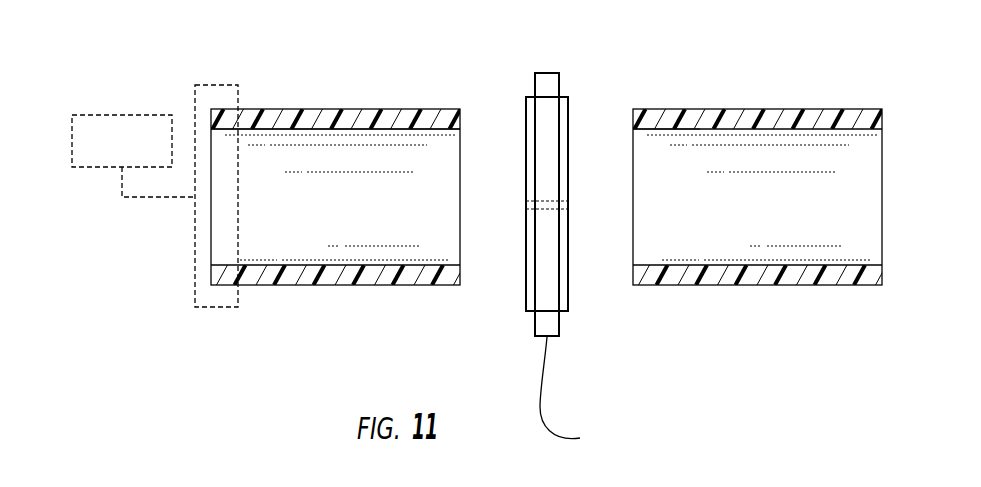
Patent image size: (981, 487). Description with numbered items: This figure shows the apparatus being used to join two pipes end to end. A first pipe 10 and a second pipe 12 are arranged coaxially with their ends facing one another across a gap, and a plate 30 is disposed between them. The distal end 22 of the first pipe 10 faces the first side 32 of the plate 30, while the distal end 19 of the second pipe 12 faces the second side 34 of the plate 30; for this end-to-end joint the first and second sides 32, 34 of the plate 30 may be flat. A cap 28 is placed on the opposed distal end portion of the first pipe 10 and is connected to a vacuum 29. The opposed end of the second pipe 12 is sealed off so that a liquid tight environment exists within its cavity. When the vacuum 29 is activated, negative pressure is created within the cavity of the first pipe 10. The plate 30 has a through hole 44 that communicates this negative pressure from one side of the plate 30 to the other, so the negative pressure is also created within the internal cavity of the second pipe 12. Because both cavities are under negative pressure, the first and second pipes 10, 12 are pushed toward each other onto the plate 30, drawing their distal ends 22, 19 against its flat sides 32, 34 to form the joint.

The first pipe 10 is at (316, 98).
The second pipe 12 is at (775, 88).
The distal end of second pipe 19 is at (633, 127).
The distal end 22 is at (462, 125).
The cap 28 is at (220, 84).
The vacuum 29 is at (72, 137).
The plate 30 is at (550, 48).
The first side of plate 32 is at (526, 165).
The second side of plate 34 is at (568, 184).
The through hole 44 is at (540, 210).